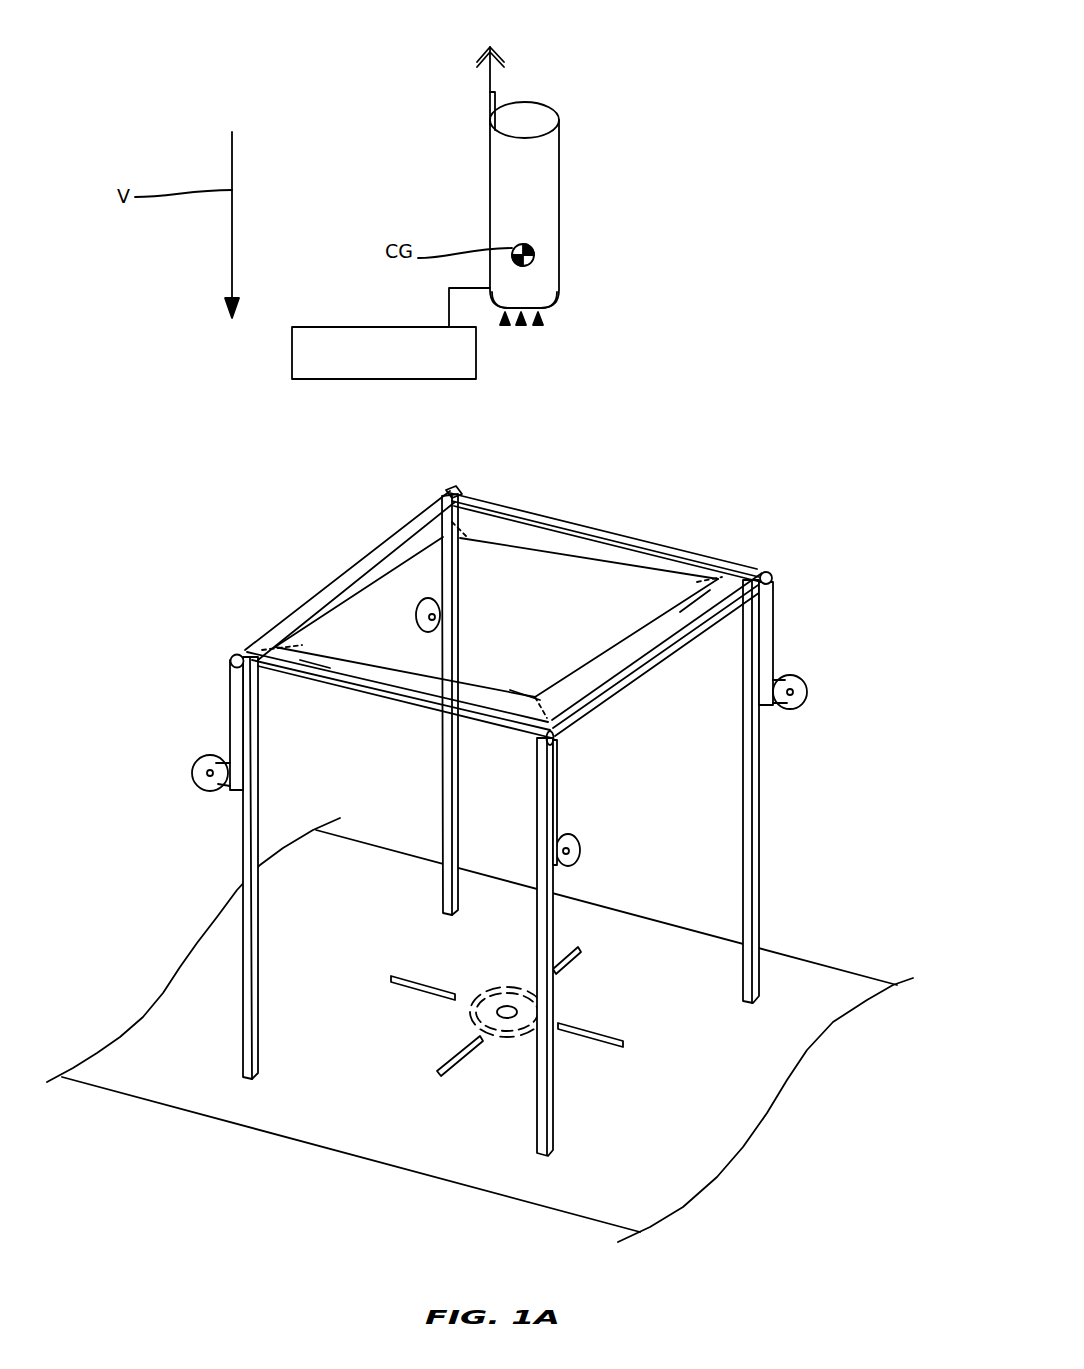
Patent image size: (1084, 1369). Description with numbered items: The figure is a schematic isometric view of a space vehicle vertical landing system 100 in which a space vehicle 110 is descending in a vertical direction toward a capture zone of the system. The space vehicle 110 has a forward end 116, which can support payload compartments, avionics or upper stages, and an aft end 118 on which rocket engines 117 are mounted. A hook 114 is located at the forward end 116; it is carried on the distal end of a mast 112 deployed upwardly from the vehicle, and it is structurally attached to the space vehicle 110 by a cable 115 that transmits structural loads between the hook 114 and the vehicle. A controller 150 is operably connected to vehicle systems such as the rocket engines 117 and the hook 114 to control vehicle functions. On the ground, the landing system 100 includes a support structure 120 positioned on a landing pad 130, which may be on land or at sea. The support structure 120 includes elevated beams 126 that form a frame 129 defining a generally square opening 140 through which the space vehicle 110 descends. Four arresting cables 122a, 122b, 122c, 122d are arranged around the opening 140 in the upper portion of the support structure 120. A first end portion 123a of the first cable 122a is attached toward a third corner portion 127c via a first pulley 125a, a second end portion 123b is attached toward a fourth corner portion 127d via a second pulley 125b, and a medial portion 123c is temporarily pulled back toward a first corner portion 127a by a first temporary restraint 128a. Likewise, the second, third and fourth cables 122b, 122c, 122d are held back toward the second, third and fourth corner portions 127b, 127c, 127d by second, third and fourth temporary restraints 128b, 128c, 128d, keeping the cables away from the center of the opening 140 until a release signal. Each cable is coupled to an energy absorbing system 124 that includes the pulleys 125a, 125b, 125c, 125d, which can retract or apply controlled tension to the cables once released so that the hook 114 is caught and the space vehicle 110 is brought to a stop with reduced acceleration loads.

The space vehicle vertical landing system 100 is at (868, 142).
The space vehicle 110 is at (490, 172).
The mast 112 is at (497, 97).
The hook 114 is at (498, 50).
The cable 115 is at (488, 82).
The forward end 116 is at (552, 95).
The rocket engines 117 is at (505, 326).
The aft end 118 is at (552, 336).
The support structure 120 is at (760, 833).
The first cable 122a is at (588, 662).
The second cable 122b is at (523, 540).
The third cable 122c is at (333, 648).
The fourth cable 122d is at (653, 570).
The first end portion 123a is at (315, 665).
The second end portion 123b is at (697, 603).
The medial portion 123c is at (518, 688).
The energy absorbing system 124 is at (808, 643).
The first pulley 125a is at (190, 775).
The second pulley 125b is at (808, 690).
The third pulley 125c is at (579, 840).
The fourth pulley 125d is at (440, 612).
The elevated beams 126 is at (602, 537).
The first corner portion 127a is at (567, 728).
The second corner portion 127b is at (448, 500).
The third corner portion 127c is at (272, 665).
The fourth corner portion 127d is at (740, 568).
The first temporary restraint 128a is at (528, 703).
The second temporary restraint 128b is at (463, 527).
The third temporary restraint 128c is at (293, 647).
The fourth temporary restraint 128d is at (700, 578).
The frame 129 is at (357, 573).
The landing pad 130 is at (853, 987).
The opening 140 is at (386, 474).
The controller 150 is at (292, 376).